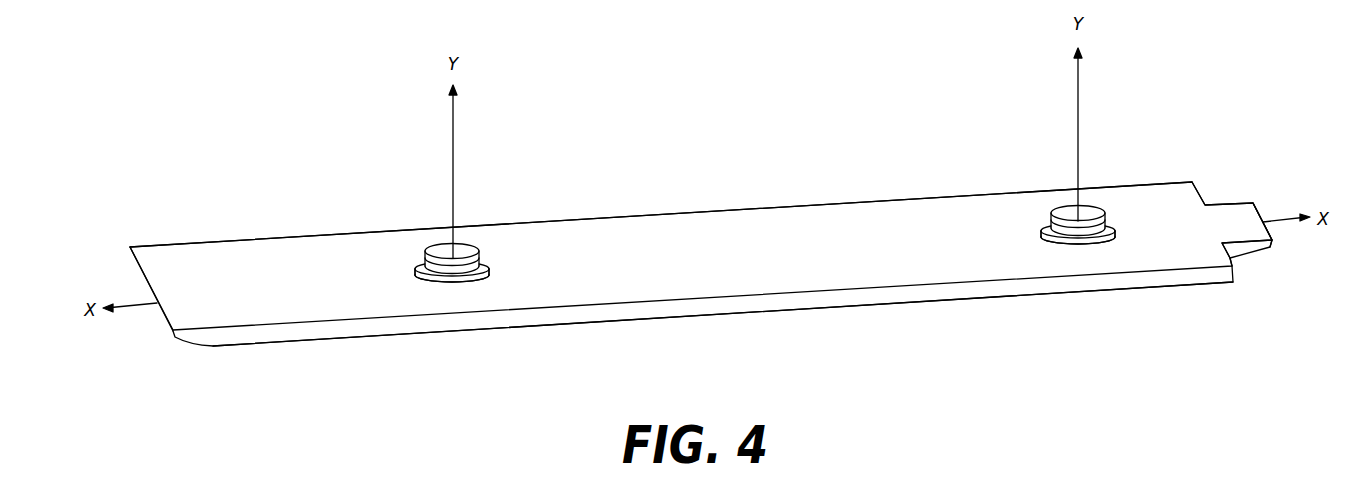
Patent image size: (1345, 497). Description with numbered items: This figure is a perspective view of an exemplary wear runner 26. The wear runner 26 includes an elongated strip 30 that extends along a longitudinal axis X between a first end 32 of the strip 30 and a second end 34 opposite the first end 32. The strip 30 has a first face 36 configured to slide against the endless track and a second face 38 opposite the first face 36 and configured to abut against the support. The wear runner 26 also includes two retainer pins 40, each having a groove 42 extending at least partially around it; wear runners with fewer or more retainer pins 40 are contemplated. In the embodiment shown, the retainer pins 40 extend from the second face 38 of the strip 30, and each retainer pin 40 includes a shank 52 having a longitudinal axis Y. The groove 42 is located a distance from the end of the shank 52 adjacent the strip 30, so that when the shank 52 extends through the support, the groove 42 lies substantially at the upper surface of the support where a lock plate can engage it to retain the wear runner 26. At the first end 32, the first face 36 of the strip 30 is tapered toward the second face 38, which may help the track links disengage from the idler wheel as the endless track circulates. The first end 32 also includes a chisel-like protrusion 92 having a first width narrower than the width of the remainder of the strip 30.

The wear runner 26 is at (757, 88).
The elongated strip 30 is at (622, 228).
The first end 32 is at (1213, 188).
The second end 34 is at (155, 227).
The first face 36 is at (305, 342).
The second face 38 is at (350, 258).
The retainer pin 40 is at (447, 249).
The groove 42 is at (481, 258).
The shank 52 is at (465, 283).
The chisel-like protrusion 92 is at (1245, 203).